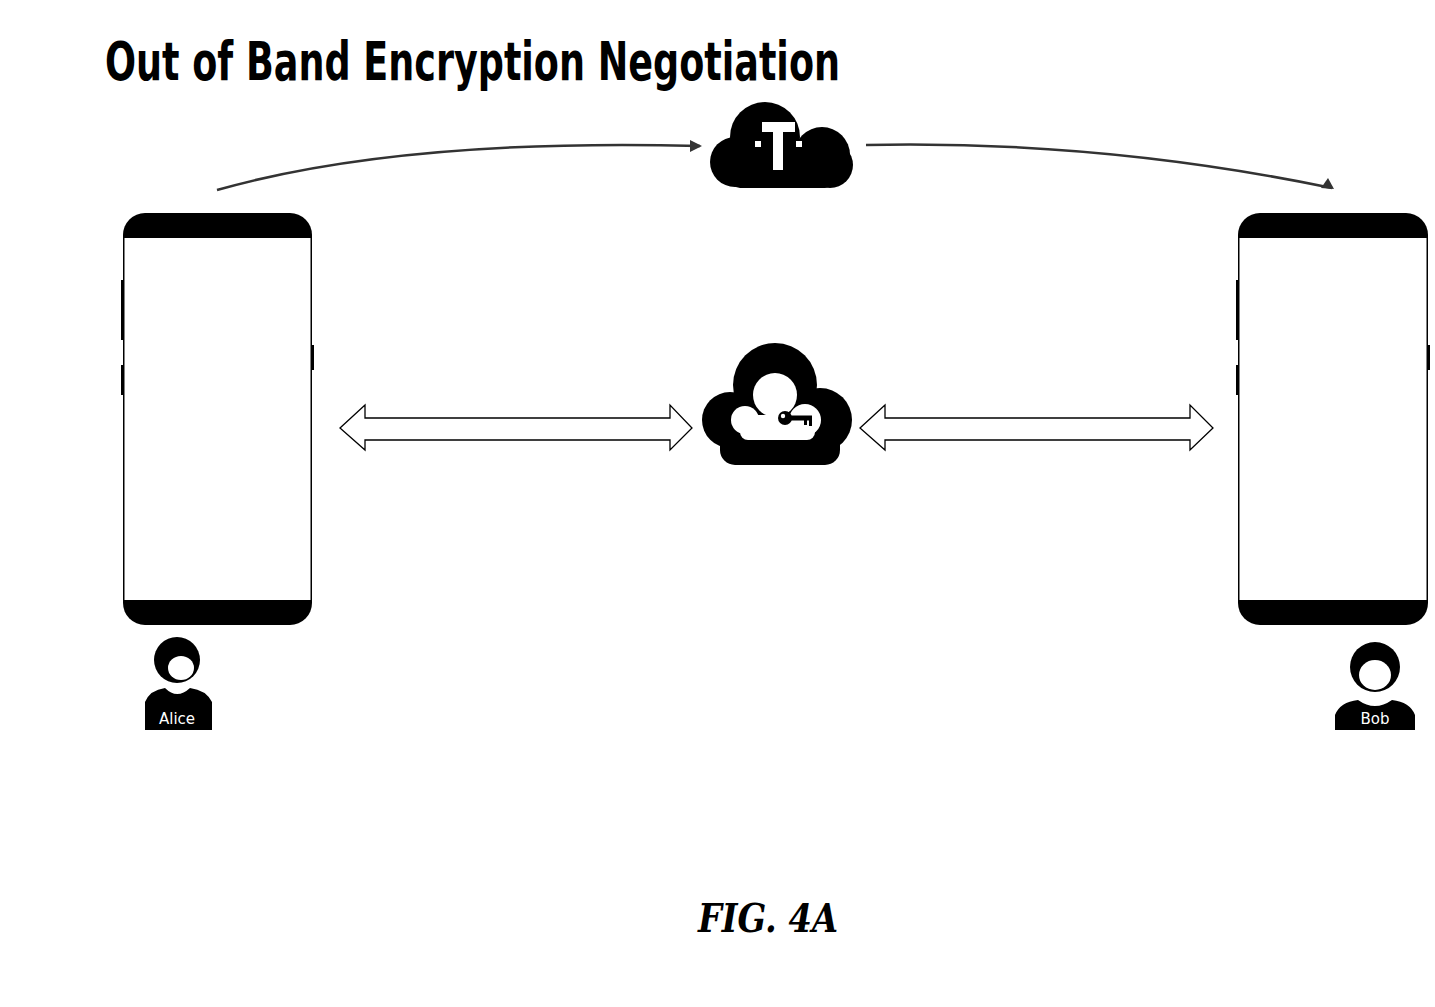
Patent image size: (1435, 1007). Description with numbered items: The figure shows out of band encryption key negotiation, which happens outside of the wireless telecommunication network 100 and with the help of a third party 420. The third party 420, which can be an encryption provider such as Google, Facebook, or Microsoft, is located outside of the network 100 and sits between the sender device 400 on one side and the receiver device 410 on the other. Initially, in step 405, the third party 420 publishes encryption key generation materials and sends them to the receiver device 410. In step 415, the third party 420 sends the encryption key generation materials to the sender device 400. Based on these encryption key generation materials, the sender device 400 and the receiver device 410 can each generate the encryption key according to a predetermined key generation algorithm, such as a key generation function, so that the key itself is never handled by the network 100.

The wireless telecommunication network 100 is at (731, 138).
The sender device 400 is at (172, 213).
The receiver device 410 is at (1411, 213).
The third party 420 is at (742, 353).
The step of sending encryption key generation materials to sender device 415 is at (540, 418).
The step of publishing encryption key generation materials to receiver device 405 is at (991, 418).